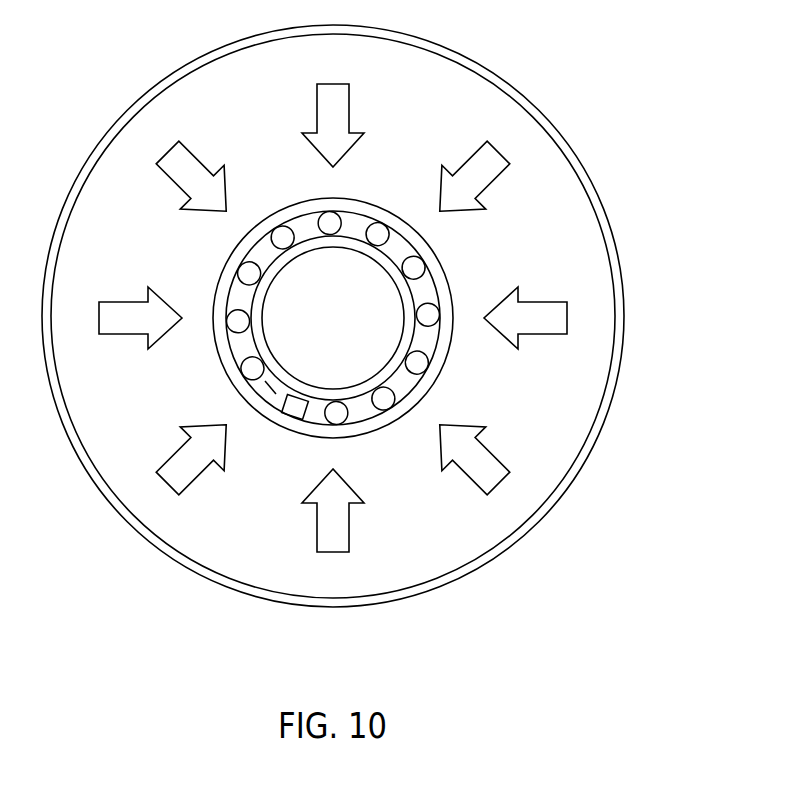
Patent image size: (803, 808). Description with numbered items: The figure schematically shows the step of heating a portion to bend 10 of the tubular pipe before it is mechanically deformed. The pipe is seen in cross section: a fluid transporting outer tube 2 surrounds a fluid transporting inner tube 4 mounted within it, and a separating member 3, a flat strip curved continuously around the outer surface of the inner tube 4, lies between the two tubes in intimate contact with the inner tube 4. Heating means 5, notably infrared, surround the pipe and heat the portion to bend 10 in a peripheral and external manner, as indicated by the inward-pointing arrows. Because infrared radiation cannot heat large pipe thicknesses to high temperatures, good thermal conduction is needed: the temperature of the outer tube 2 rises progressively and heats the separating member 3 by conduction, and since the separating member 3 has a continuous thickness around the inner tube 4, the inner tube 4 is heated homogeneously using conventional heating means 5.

The heating means 5 is at (480, 63).
The portion to bend 10 is at (357, 335).
The fluid transporting outer tube 2 is at (445, 355).
The separating member 3 is at (388, 402).
The fluid transporting inner tube 4 is at (263, 348).